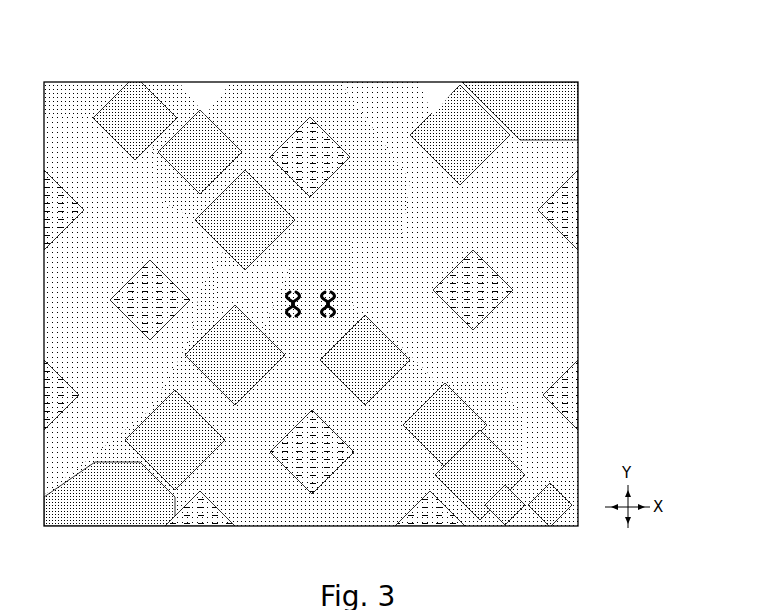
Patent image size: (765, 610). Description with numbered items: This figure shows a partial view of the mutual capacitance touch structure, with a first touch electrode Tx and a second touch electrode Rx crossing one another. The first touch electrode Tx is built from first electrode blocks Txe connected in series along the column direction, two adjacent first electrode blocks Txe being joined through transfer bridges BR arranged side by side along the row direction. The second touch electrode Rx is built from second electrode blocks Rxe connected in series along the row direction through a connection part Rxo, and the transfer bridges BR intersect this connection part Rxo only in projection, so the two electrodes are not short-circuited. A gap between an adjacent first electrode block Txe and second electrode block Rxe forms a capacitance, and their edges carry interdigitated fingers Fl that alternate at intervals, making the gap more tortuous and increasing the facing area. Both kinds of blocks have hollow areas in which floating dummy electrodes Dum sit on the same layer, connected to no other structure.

The second touch electrode Rx is at (311, 268).
The connection part Rxo is at (310, 291).
The second electrode block Rxe is at (447, 245).
The dummy electrode Dum is at (495, 295).
The transfer bridge BR is at (338, 309).
The first touch electrode Tx is at (360, 409).
The first electrode block Txe is at (373, 427).
The interdigitated finger Fl is at (500, 490).